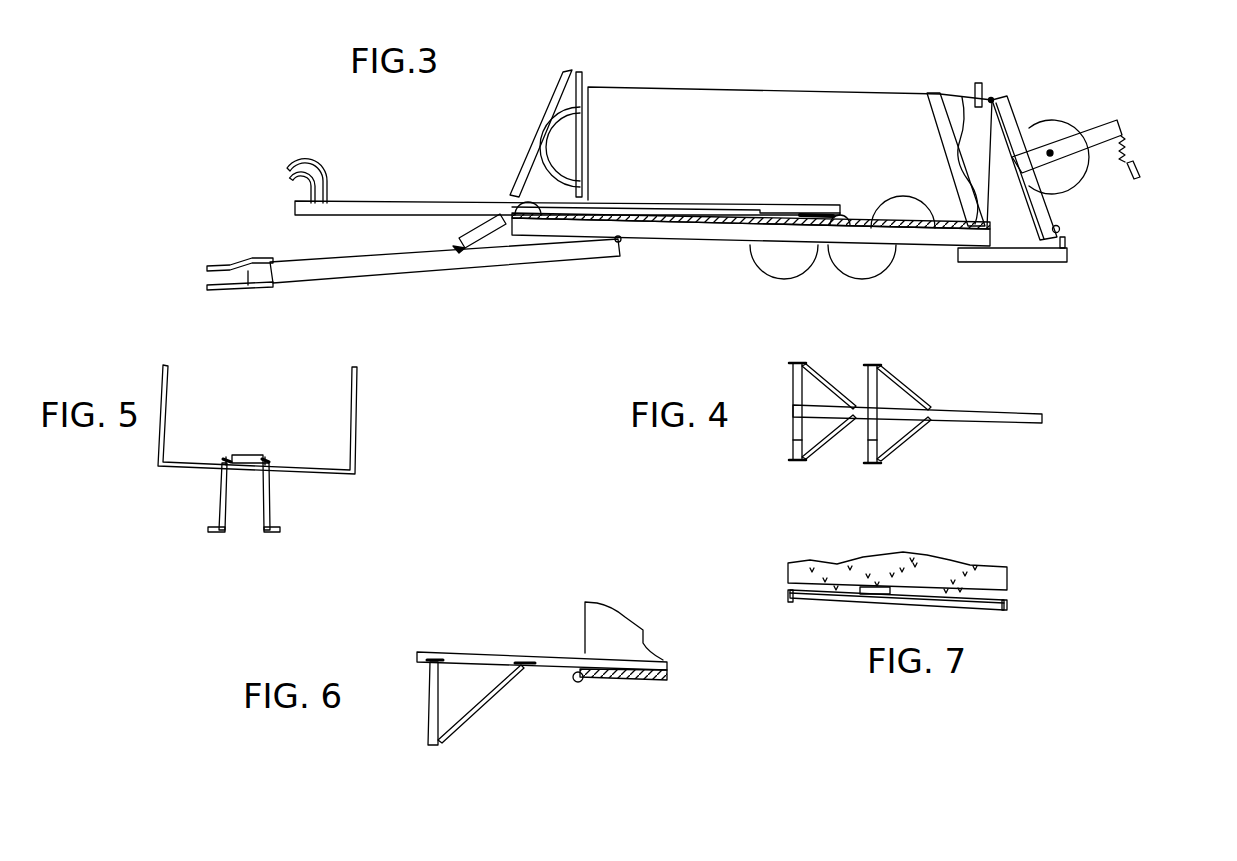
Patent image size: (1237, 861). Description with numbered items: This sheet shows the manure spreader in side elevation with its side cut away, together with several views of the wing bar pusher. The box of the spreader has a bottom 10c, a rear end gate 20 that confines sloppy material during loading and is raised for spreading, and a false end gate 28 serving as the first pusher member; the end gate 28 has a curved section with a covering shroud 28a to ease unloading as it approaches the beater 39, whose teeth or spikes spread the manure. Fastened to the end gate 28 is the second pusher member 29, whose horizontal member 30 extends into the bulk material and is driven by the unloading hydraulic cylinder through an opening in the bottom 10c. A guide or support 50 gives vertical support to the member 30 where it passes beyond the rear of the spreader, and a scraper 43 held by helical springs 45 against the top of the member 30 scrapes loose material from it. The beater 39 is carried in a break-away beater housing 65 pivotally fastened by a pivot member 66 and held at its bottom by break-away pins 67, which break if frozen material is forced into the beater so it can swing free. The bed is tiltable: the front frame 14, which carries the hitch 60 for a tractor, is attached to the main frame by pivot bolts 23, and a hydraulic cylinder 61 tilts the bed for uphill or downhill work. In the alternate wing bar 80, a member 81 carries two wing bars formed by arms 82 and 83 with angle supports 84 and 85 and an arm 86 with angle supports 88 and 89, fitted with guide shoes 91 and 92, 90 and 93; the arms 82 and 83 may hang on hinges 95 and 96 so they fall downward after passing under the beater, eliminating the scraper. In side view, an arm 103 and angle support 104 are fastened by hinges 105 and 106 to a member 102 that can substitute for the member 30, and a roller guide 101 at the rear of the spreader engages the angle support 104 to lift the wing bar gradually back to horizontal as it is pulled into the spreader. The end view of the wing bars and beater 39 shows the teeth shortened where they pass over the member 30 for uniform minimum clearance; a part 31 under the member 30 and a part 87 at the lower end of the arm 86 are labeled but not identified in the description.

In FIG. 3, the bottom 10c is at (936, 229).
In FIG. 3, the front frame 14 is at (312, 258).
In FIG. 3, the rear end gate 20 is at (940, 95).
In FIG. 3, the pivot bolts 23 is at (620, 243).
In FIG. 3, the end gate 28 is at (582, 62).
In FIG. 3, the covering shroud 28a is at (530, 130).
In FIG. 3, the pusher member 29 is at (728, 190).
In FIG. 7, the member 30 is at (870, 597).
In FIG. 7, the base channel 31 is at (987, 607).
In FIG. 3, the beater 39 is at (1067, 123).
In FIG. 7, the beater 39 is at (1007, 573).
In FIG. 3, the scraper 43 is at (1138, 168).
In FIG. 3, the helical springs 45 is at (1131, 147).
In FIG. 3, the guide or support 50 is at (1037, 262).
In FIG. 3, the hitch 60 is at (207, 268).
In FIG. 3, the hydraulic cylinder 61 is at (463, 228).
In FIG. 3, the beater housing 65 is at (1013, 113).
In FIG. 3, the pivot member 66 is at (993, 99).
In FIG. 3, the break-away pins 67 is at (1061, 230).
In FIG. 5, the wing bar 80 is at (270, 365).
In FIG. 4, the wing bar 80 is at (1033, 443).
In FIG. 5, the member 81 is at (240, 453).
In FIG. 4, the member 81 is at (1003, 412).
In FIG. 5, the arm 82 is at (272, 500).
In FIG. 4, the arm 82 is at (793, 435).
In FIG. 5, the arm 83 is at (218, 498).
In FIG. 4, the arm 83 is at (792, 383).
In FIG. 4, the angle support 84 is at (813, 375).
In FIG. 4, the angle support 85 is at (808, 447).
In FIG. 4, the arm 86 is at (867, 393).
In FIG. 4, the lower end of upright 87 is at (867, 440).
In FIG. 4, the angle support 88 is at (907, 390).
In FIG. 4, the angle support 89 is at (913, 432).
In FIG. 5, the guide shoe 90 is at (270, 532).
In FIG. 4, the guide shoe 90 is at (800, 462).
In FIG. 4, the guide shoe 91 is at (800, 361).
In FIG. 4, the guide shoe 92 is at (878, 367).
In FIG. 5, the guide shoe 93 is at (212, 531).
In FIG. 4, the guide shoe 93 is at (873, 463).
In FIG. 5, the hinge 95 is at (267, 458).
In FIG. 5, the hinge 96 is at (229, 458).
In FIG. 6, the roller guide 101 is at (578, 683).
In FIG. 6, the member 102 is at (475, 652).
In FIG. 6, the arm 103 is at (430, 695).
In FIG. 6, the angle support 104 is at (493, 695).
In FIG. 6, the hinge 105 is at (438, 657).
In FIG. 6, the hinge 106 is at (532, 660).